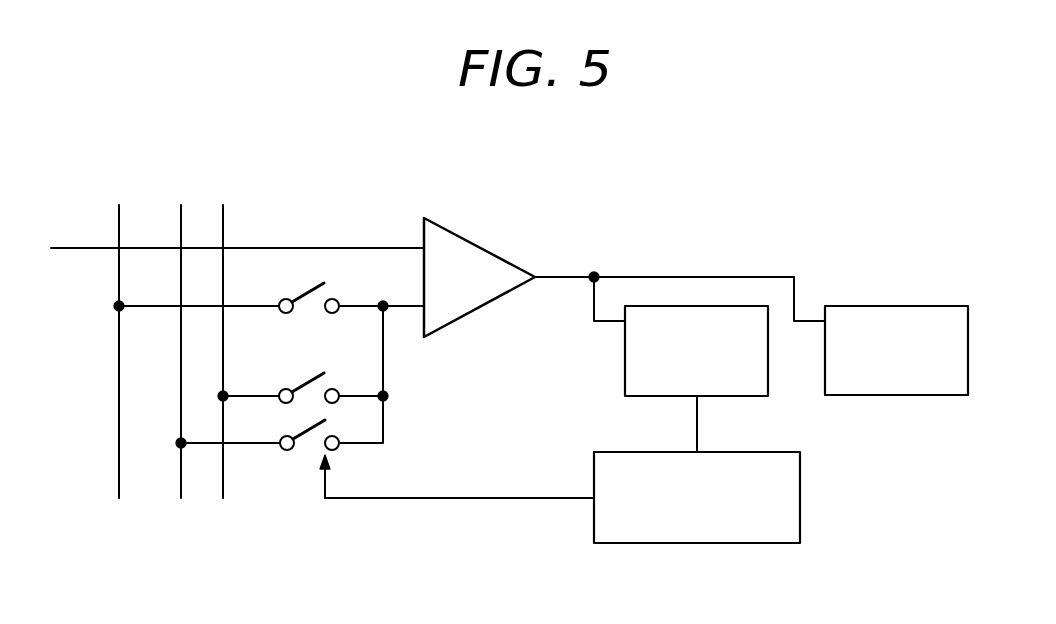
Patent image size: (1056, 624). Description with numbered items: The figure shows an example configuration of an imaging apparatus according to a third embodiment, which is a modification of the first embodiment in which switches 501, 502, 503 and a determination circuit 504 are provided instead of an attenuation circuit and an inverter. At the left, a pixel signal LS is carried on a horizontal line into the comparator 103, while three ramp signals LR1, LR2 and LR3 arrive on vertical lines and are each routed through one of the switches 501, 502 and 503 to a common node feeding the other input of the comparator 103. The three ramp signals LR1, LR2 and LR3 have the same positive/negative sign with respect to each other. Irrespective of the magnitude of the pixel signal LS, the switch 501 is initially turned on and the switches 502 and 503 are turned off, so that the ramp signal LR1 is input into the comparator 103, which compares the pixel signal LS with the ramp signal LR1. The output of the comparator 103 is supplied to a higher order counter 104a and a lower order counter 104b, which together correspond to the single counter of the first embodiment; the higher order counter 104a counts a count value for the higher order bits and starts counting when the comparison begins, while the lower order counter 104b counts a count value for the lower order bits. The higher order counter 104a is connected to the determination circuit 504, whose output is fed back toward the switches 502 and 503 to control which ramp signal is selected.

The pixel signal LS is at (84, 247).
The ramp signal LR1 is at (119, 428).
The ramp signal LR2 is at (181, 477).
The ramp signal LR3 is at (223, 477).
The switch 501 is at (307, 284).
The switch 502 is at (307, 421).
The switch 503 is at (307, 375).
The comparator 103 is at (490, 252).
The higher order counter 104a is at (625, 350).
The lower order counter 104b is at (968, 347).
The determination circuit 504 is at (800, 490).